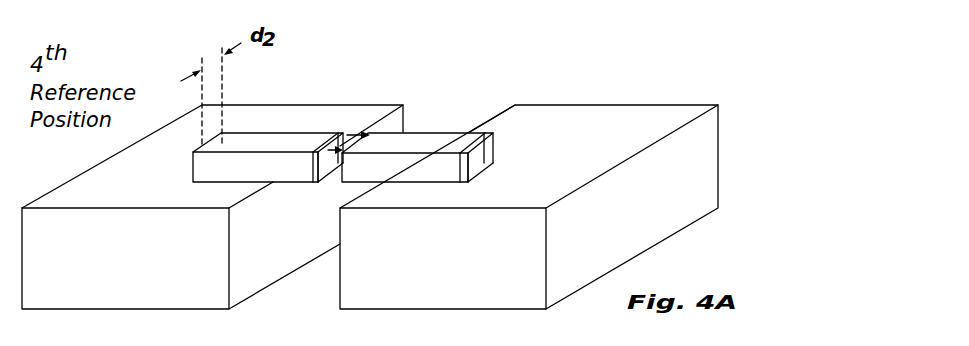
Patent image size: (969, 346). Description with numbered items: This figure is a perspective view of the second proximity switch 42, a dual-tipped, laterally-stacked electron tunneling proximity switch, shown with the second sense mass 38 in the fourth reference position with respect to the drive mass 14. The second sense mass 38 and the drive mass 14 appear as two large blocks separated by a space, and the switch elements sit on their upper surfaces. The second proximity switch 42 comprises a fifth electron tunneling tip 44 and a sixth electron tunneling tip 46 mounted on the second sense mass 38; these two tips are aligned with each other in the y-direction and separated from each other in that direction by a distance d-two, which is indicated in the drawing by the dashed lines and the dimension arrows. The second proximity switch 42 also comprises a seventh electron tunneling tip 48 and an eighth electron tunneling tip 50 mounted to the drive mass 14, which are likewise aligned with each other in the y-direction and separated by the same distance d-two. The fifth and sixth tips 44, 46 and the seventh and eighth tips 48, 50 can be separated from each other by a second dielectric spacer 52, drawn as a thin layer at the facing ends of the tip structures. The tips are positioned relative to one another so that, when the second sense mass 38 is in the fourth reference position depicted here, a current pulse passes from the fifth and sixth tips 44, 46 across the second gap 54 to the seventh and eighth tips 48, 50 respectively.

The second proximity switch 42 is at (465, 46).
The second sense mass 38 is at (132, 270).
The drive mass 14 is at (448, 270).
The fifth electron tunneling tip 44 is at (237, 134).
The seventh electron tunneling tip 48 is at (448, 159).
The sixth electron tunneling tip 46 is at (268, 130).
The eighth electron tunneling tip 50 is at (495, 139).
The second dielectric spacer 52 is at (330, 177).
The second gap 54 is at (346, 131).